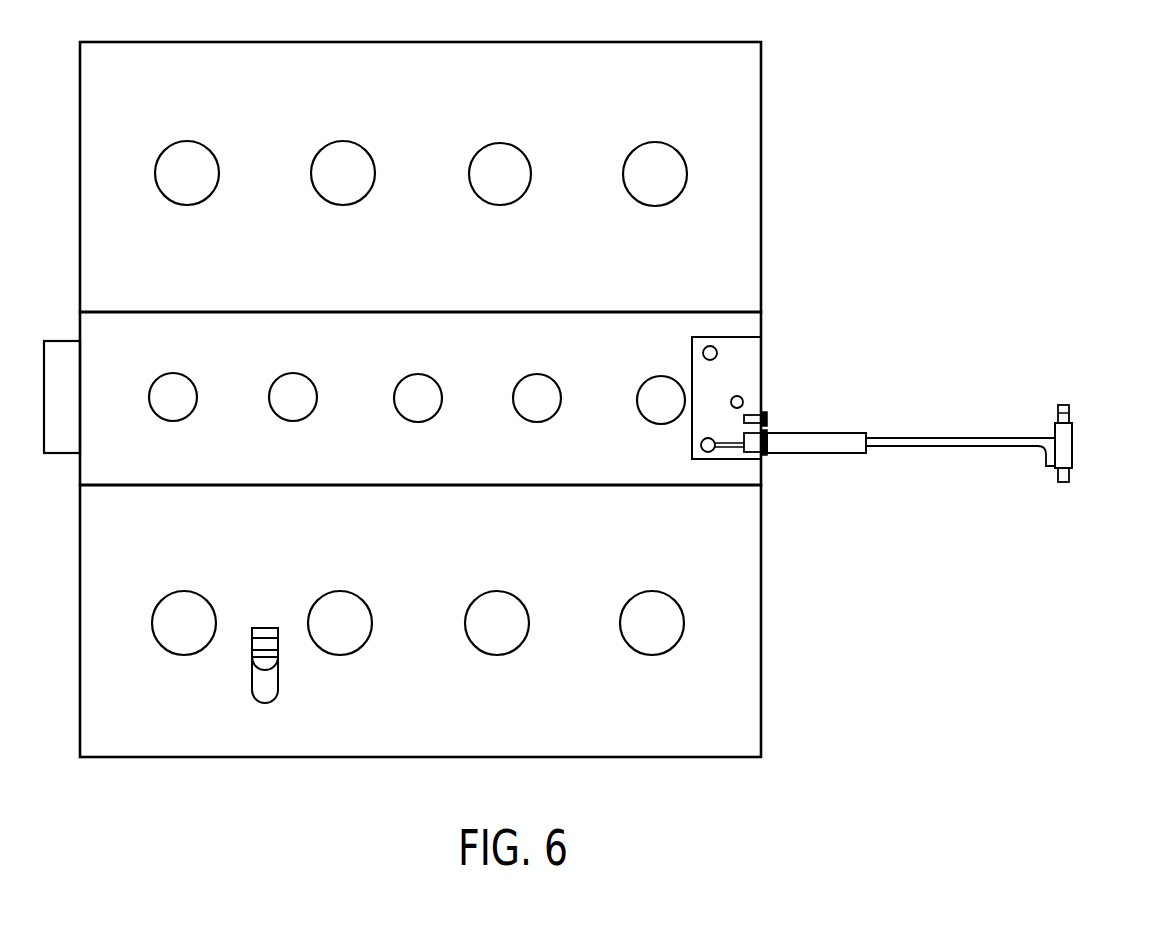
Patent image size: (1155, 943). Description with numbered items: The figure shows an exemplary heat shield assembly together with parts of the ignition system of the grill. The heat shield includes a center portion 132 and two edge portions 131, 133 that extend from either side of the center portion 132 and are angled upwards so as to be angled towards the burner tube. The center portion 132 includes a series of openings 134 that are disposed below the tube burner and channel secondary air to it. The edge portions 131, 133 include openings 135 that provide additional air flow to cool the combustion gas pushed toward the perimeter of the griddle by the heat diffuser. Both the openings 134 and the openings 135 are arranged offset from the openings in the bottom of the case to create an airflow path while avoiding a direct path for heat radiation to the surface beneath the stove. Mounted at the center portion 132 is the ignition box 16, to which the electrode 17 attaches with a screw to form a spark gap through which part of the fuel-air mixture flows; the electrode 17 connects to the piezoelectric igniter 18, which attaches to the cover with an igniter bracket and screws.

The ignition box 16 is at (692, 348).
The electrode 17 is at (840, 455).
The piezoelectric igniter 18 is at (1073, 430).
The edge portion 131 is at (760, 617).
The center portion 132 is at (752, 327).
The edge portion 133 is at (761, 146).
The openings 134 is at (547, 413).
The openings 135 is at (333, 160).